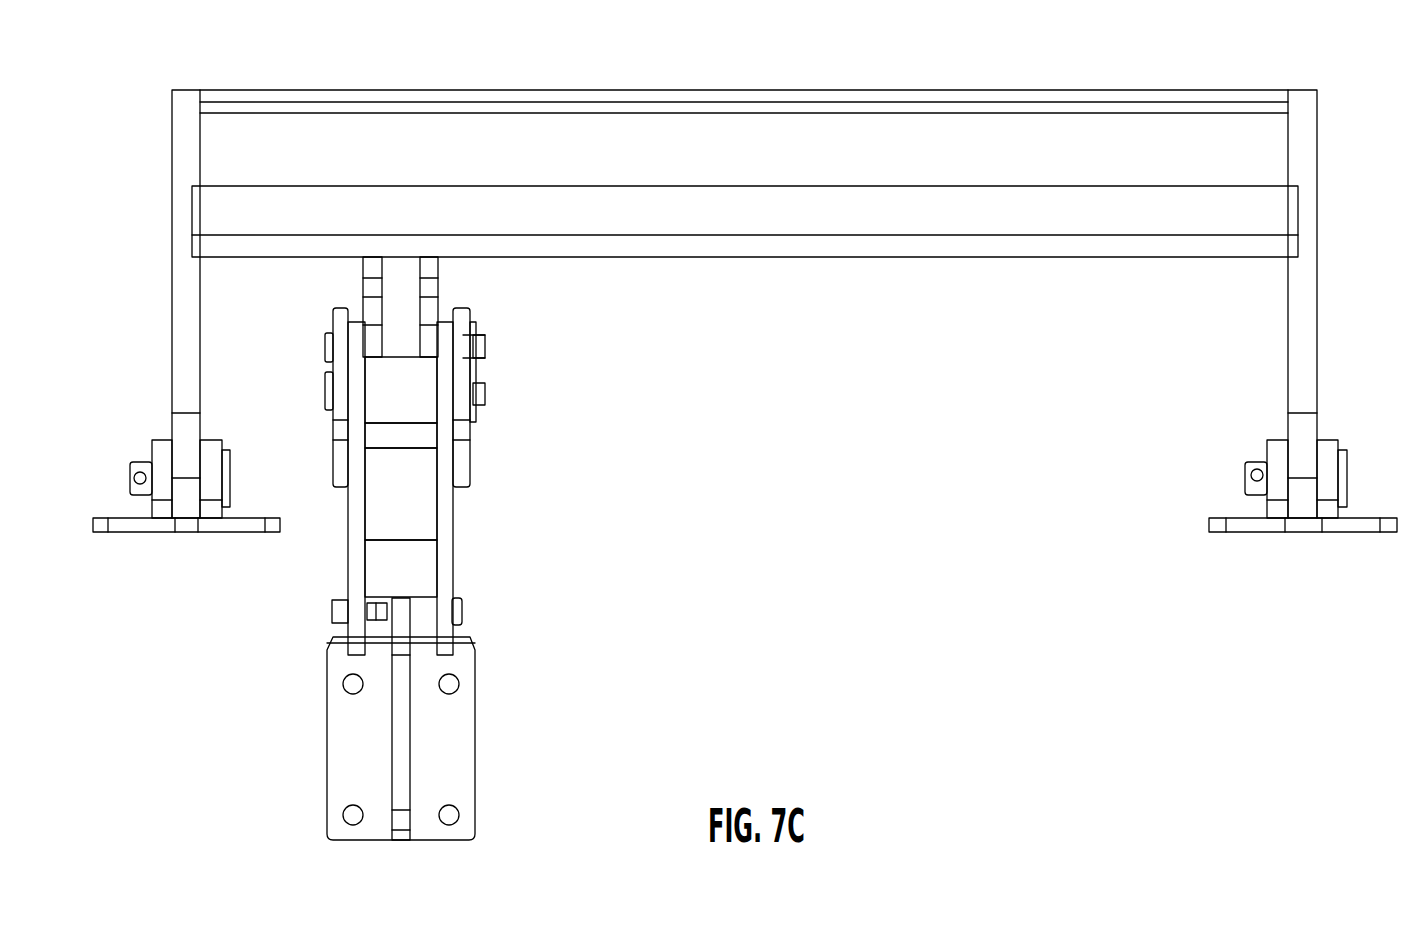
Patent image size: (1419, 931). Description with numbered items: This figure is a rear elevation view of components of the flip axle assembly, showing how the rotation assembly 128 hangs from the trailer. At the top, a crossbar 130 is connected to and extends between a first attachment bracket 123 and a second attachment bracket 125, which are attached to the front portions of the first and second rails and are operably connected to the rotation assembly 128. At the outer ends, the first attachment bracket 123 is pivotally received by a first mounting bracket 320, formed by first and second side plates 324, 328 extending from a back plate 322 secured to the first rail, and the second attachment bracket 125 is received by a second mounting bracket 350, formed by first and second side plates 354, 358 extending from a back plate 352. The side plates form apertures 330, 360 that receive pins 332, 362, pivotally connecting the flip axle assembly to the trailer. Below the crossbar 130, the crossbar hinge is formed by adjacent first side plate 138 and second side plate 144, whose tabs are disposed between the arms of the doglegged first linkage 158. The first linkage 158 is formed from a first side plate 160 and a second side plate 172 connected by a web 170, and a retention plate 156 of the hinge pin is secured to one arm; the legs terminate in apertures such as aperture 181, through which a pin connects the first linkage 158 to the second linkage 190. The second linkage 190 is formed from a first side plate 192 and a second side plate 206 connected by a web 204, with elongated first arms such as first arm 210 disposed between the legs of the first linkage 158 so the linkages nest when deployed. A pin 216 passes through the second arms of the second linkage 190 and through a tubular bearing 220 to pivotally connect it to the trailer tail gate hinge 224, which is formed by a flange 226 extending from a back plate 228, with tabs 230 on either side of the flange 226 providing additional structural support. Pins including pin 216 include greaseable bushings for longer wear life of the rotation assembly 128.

The first attachment bracket 123 is at (172, 137).
The second attachment bracket 125 is at (1317, 140).
The rotation assembly 128 is at (741, 265).
The crossbar 130 is at (884, 75).
The first side plate 138 is at (363, 271).
The second side plate 144 is at (438, 269).
The retention plate 156 is at (477, 371).
The first linkage 158 is at (434, 572).
The first side plate 160 is at (339, 452).
The web 170 is at (413, 398).
The second side plate 172 is at (462, 437).
The aperture 181 is at (478, 410).
The second linkage 190 is at (433, 488).
The first side plate 192 is at (355, 548).
The web 204 is at (415, 512).
The second side plate 206 is at (445, 567).
The first arm 210 is at (448, 580).
The pin 216 is at (333, 610).
The tubular bearing 220 is at (462, 612).
The trailer tail gate hinge 224 is at (414, 743).
The flange 226 is at (398, 742).
The back plate 228 is at (458, 780).
The tabs 230 is at (337, 650).
The first mounting bracket 320 is at (182, 499).
The back plate 322 is at (128, 535).
The first side plate 324 is at (158, 440).
The second side plate 328 is at (213, 440).
The aperture 330 is at (232, 505).
The pin 332 is at (130, 480).
The second mounting bracket 350 is at (1292, 504).
The back plate 352 is at (1250, 535).
The first side plate 354 is at (1267, 455).
The second side plate 358 is at (1330, 440).
The aperture 360 is at (1340, 507).
The pin 362 is at (1245, 487).